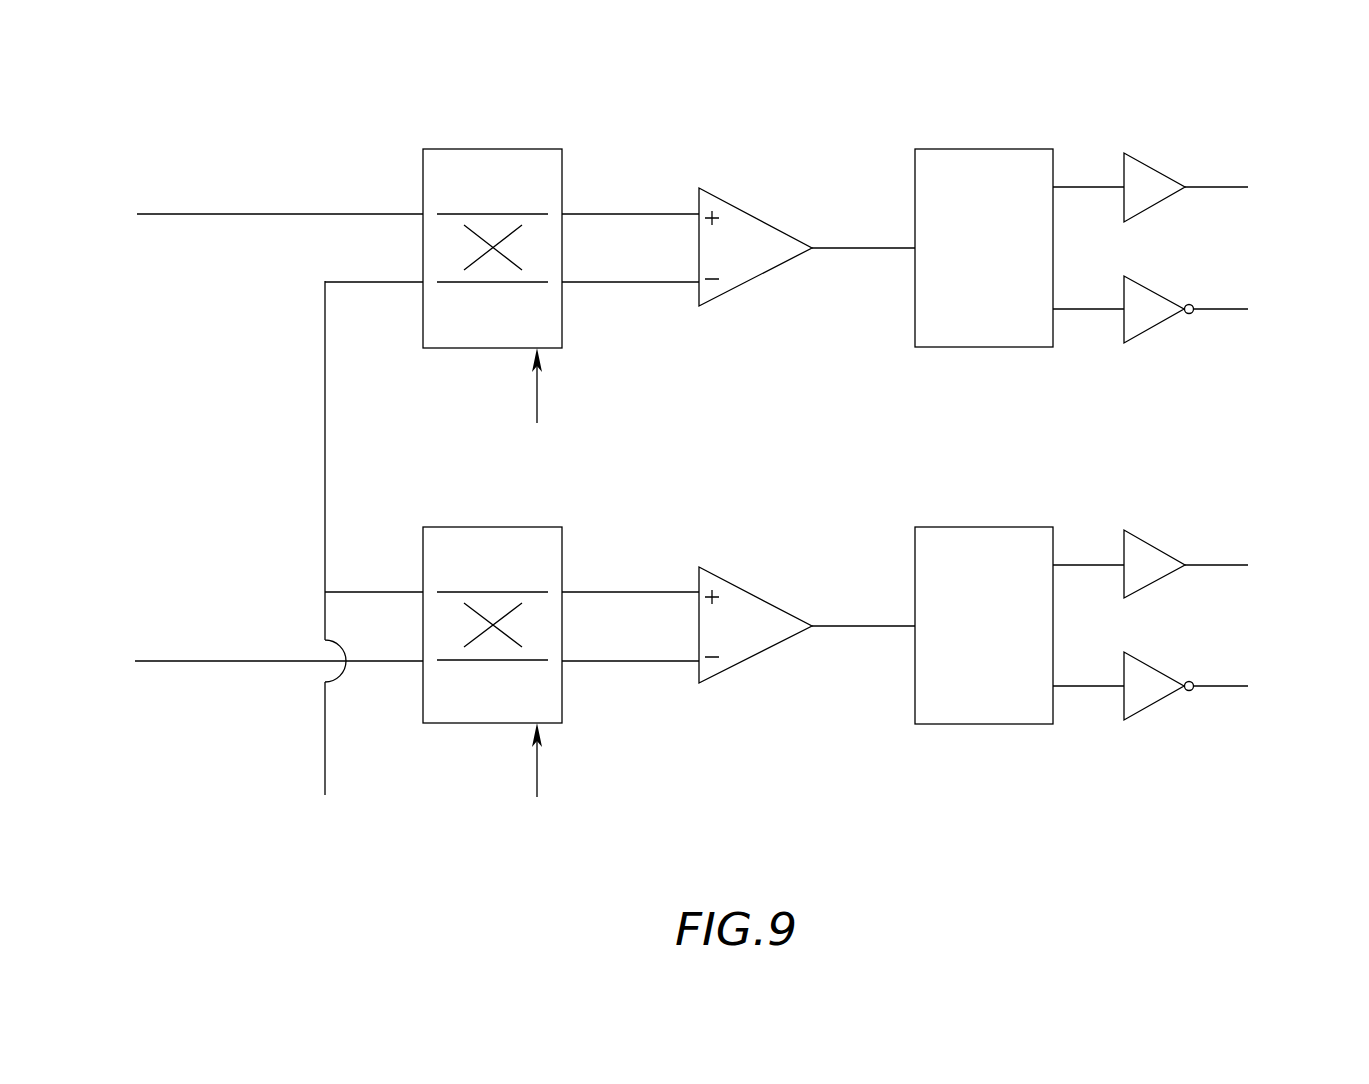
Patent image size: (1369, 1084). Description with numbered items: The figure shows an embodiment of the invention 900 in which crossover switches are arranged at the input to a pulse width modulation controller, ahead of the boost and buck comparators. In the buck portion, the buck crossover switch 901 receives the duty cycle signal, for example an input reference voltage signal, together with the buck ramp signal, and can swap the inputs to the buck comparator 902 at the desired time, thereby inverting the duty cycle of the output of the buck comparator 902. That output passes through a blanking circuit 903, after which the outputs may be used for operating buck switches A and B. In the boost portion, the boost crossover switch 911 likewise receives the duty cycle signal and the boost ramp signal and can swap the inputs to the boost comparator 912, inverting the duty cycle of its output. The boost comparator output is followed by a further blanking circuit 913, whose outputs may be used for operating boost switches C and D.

The embodiment of the invention 900 is at (1256, 118).
The buck crossover switch 901 is at (493, 723).
The buck comparator 902 is at (757, 657).
The blanking circuit 903 is at (982, 724).
The boost crossover switch 911 is at (493, 348).
The boost comparator 912 is at (757, 280).
The boost blanking circuit 913 is at (982, 347).